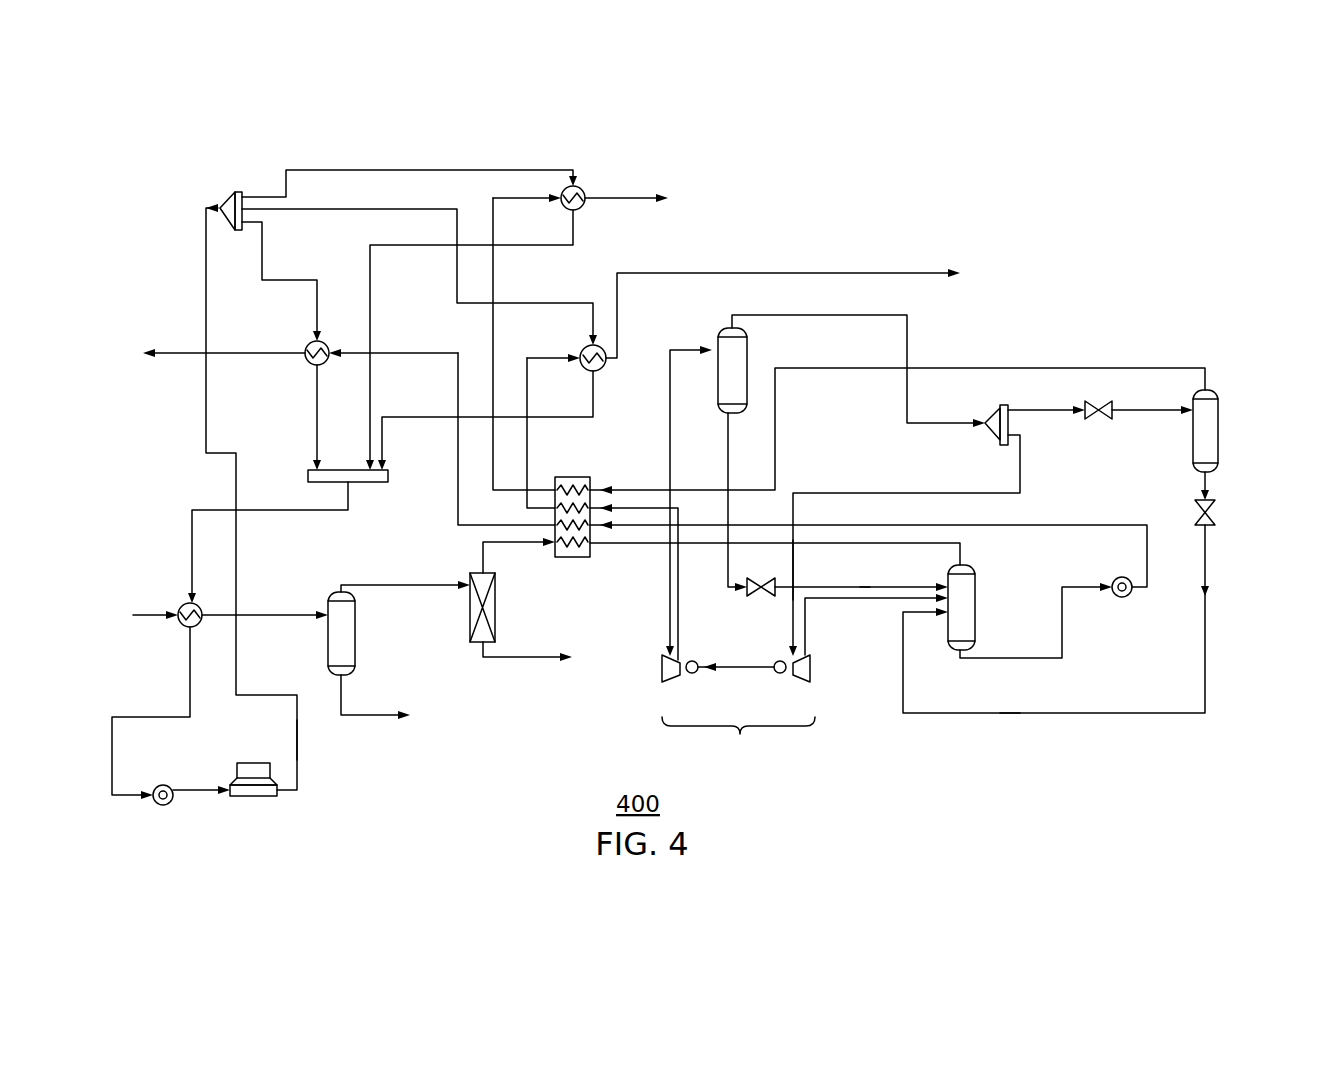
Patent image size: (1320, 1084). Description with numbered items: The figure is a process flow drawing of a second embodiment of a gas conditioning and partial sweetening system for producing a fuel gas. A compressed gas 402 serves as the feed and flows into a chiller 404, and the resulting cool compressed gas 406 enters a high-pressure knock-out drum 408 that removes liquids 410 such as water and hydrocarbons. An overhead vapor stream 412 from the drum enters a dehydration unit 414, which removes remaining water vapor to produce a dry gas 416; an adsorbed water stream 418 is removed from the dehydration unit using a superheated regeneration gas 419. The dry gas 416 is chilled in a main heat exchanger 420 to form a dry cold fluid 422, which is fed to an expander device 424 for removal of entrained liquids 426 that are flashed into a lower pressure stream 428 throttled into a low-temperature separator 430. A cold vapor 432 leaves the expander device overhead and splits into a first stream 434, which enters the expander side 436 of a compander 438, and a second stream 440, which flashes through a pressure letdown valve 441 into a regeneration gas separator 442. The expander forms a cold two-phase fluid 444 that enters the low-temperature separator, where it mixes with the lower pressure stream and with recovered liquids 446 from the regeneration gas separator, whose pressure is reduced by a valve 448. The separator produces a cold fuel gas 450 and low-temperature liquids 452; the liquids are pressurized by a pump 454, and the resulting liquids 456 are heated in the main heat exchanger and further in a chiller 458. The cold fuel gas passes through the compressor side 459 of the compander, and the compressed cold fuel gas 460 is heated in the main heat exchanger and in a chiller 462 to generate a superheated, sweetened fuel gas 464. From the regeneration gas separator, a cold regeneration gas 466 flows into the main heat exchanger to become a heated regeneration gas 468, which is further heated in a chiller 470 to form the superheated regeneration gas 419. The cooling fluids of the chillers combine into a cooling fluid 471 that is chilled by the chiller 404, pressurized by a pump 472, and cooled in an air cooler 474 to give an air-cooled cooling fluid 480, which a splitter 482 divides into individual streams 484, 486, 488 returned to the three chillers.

The compressed gas 402 is at (162, 606).
The chiller 404 is at (186, 630).
The cool compressed gas 406 is at (298, 610).
The high-pressure knock-out drum 408 is at (328, 630).
The liquids 410 is at (378, 720).
The overhead vapor stream 412 is at (400, 583).
The dehydration unit 414 is at (495, 615).
The dry gas 416 is at (500, 545).
The adsorbed water stream 418 is at (520, 660).
The superheated regeneration gas 419 is at (648, 202).
The main heat exchanger 420 is at (576, 475).
The dry cold fluid 422 is at (668, 422).
The expander device 424 is at (718, 330).
The entrained liquids 426 is at (727, 457).
The lower pressure stream 428 is at (865, 587).
The low-temperature separator 430 is at (978, 603).
The cold vapor 432 is at (803, 313).
The first stream 434 is at (870, 492).
The expander side 436 is at (812, 666).
The compander 438 is at (738, 743).
The second stream 440 is at (1033, 406).
The pressure letdown valve 441 is at (1112, 416).
The regeneration gas separator 442 is at (1219, 412).
The cold two-phase fluid 444 is at (877, 600).
The recovered liquids 446 is at (1207, 630).
The valve 448 is at (1215, 513).
The cold fuel gas 450 is at (858, 548).
The low-temperature liquids 452 is at (1008, 662).
The pump 454 is at (1122, 576).
The liquids 456 is at (820, 522).
The chiller 458 is at (307, 366).
The compressor side 459 is at (673, 682).
The compressed cold fuel gas 460 is at (679, 618).
The chiller 462 is at (608, 371).
The superheated, sweetened fuel gas 464 is at (752, 268).
The cold regeneration gas 466 is at (1007, 366).
The heated regeneration gas 468 is at (492, 335).
The chiller 470 is at (580, 188).
The cooling fluid 471 is at (258, 512).
The pump 472 is at (170, 810).
The air cooler 474 is at (250, 800).
The air-cooled cooling fluid 480 is at (297, 742).
The splitter 482 is at (222, 205).
The individual stream 484 is at (312, 166).
The individual stream 486 is at (332, 208).
The individual stream 488 is at (264, 262).